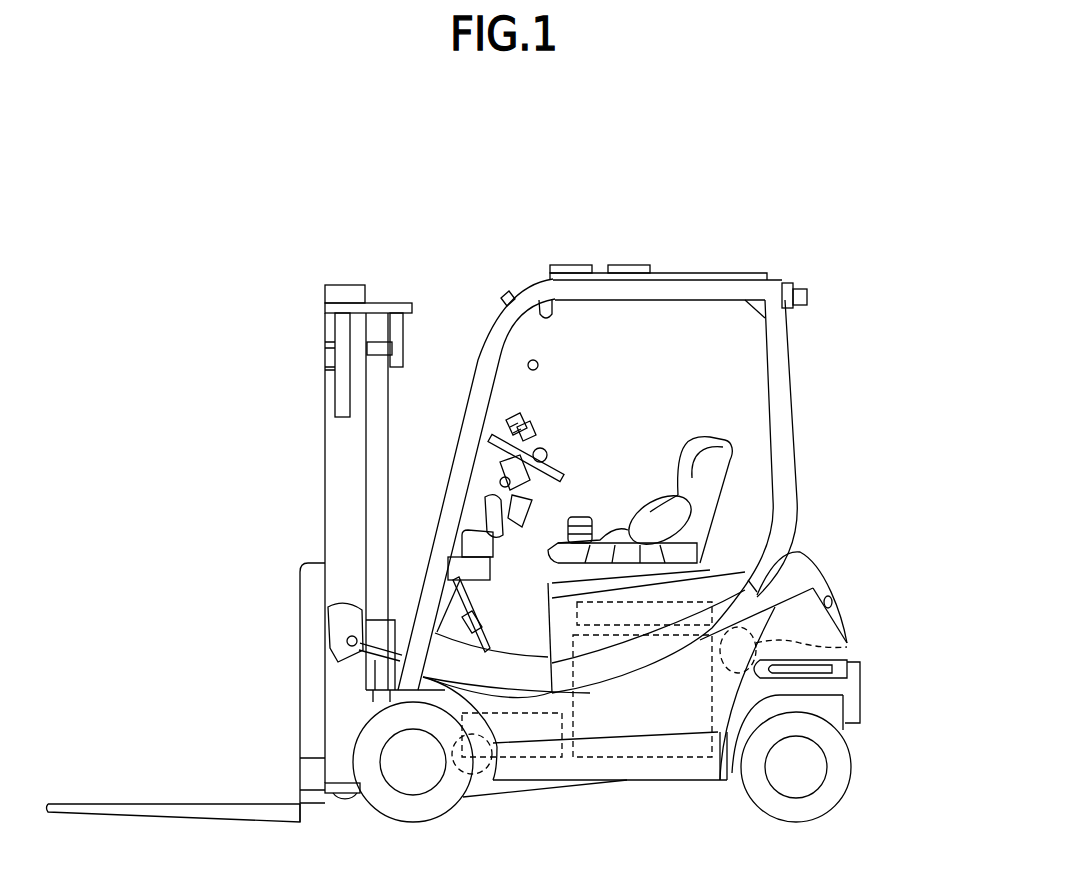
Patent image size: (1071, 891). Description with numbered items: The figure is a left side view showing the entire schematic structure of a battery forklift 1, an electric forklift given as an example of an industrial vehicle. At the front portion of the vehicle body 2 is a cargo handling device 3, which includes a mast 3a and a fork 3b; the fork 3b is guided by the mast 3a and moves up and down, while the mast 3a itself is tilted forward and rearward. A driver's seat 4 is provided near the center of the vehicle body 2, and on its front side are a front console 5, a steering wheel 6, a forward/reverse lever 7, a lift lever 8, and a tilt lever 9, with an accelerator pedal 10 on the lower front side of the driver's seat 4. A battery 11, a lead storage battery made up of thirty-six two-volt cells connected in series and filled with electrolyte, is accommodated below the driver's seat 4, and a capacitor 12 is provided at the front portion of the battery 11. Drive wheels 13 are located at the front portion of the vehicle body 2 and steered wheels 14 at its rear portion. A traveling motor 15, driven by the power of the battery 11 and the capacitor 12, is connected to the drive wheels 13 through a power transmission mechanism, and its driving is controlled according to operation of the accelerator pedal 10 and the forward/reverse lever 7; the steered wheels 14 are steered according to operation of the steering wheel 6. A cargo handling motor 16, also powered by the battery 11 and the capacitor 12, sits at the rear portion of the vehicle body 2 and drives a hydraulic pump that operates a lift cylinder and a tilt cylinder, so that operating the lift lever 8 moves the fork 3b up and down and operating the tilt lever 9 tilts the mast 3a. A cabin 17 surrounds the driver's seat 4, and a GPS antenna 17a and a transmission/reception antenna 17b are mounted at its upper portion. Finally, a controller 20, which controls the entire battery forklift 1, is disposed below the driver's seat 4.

The battery forklift 1 is at (718, 160).
The vehicle body 2 is at (596, 797).
The cargo handling device 3 is at (240, 628).
The mast 3a is at (324, 450).
The fork 3b is at (170, 803).
The driver's seat 4 is at (696, 440).
The front console 5 is at (475, 496).
The steering wheel 6 is at (558, 466).
The forward/reverse lever 7 is at (503, 523).
The lift lever 8 is at (535, 428).
The tilt lever 9 is at (518, 416).
The accelerator pedal 10 is at (487, 634).
The battery 11 is at (653, 760).
The capacitor 12 is at (533, 760).
The drive wheels 13 is at (405, 823).
The steered wheels 14 is at (797, 823).
The traveling motor 15 is at (478, 775).
The cargo handling motor 16 is at (852, 647).
The cabin 17 is at (698, 290).
The GPS antenna 17a is at (566, 265).
The transmission/reception antenna 17b is at (632, 265).
The controller 20 is at (722, 585).